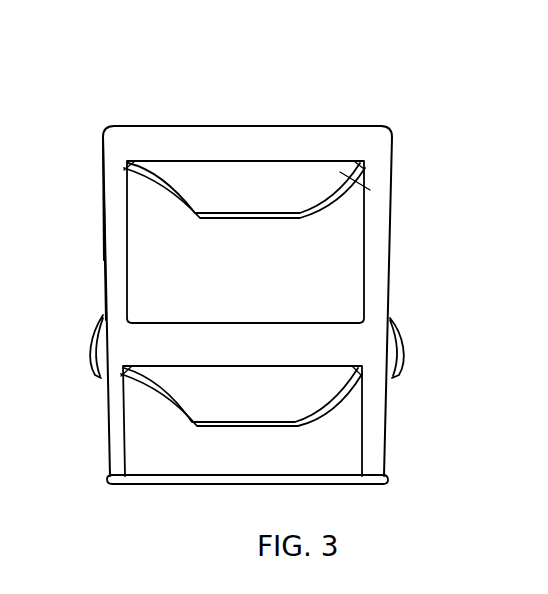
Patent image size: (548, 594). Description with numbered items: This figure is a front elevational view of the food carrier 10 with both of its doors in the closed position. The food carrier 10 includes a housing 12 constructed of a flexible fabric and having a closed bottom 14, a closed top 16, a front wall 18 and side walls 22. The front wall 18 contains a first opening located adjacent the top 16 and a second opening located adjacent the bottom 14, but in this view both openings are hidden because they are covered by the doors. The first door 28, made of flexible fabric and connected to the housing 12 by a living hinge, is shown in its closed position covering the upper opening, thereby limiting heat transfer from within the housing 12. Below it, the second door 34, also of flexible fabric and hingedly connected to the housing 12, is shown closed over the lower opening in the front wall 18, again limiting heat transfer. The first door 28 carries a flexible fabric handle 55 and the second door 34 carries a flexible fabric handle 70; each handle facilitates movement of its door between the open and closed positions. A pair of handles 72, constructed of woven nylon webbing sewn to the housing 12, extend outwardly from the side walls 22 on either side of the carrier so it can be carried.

The food carrier 10 is at (288, 82).
The housing 12 is at (337, 126).
The bottom 14 is at (157, 484).
The top 16 is at (291, 126).
The front wall 18 is at (112, 244).
The side walls 22 is at (101, 182).
The first door 28 is at (355, 236).
The second door 34 is at (140, 437).
The flexible fabric handle 55 is at (345, 182).
The flexible fabric handle 70 is at (278, 425).
The handles 72 is at (98, 373).